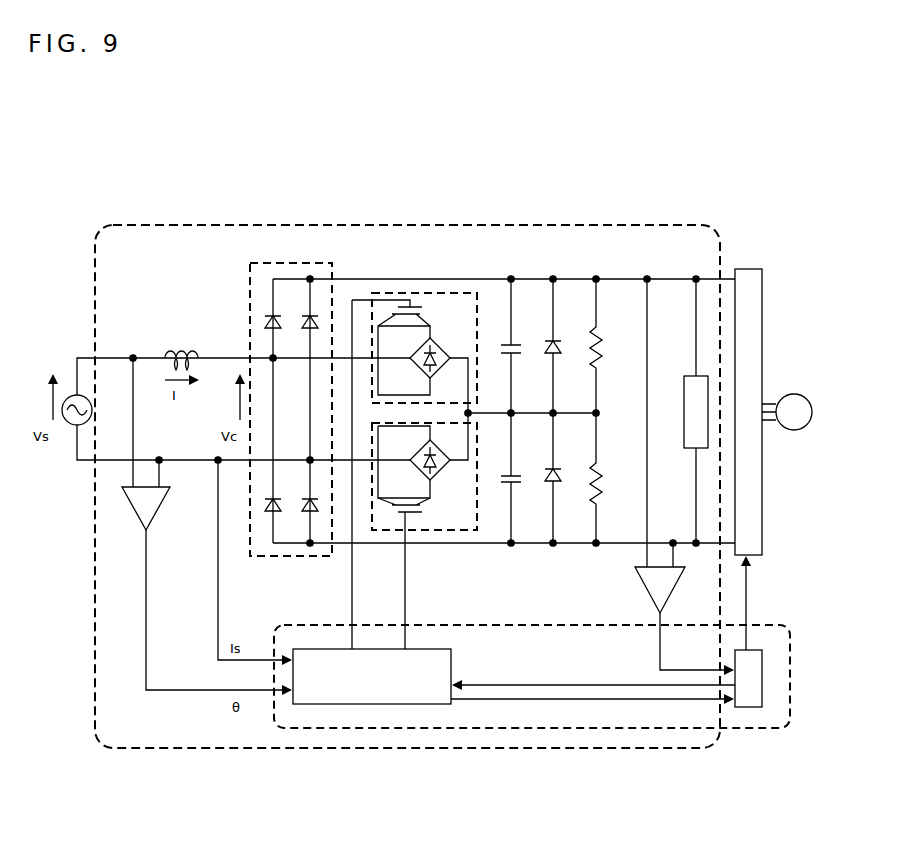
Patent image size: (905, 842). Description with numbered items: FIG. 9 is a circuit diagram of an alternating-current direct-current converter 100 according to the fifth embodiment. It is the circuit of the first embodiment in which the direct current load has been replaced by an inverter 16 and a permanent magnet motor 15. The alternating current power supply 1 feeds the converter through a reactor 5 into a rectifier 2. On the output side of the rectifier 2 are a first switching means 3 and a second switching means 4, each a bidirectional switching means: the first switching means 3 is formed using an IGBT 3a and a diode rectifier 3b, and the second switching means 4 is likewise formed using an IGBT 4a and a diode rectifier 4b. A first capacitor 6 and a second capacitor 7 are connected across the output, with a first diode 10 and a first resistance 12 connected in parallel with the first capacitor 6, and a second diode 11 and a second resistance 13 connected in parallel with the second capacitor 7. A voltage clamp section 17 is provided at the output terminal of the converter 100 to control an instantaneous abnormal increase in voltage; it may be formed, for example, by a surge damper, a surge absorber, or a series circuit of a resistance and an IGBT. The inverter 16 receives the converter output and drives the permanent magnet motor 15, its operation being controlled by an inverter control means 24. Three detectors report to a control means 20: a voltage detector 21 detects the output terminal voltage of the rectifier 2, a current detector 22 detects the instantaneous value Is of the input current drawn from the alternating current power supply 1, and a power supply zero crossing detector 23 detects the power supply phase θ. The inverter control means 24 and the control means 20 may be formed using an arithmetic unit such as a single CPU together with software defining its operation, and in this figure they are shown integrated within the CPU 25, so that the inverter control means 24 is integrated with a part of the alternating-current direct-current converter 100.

The alternating current power supply 1 is at (93, 372).
The rectifier 2 is at (263, 266).
The first switching means 3 is at (414, 446).
The IGBT 3a is at (410, 306).
The diode rectifier 3b is at (440, 342).
The second switching means 4 is at (424, 531).
The IGBT 4a is at (415, 533).
The diode rectifier 4b is at (439, 484).
The reactor 5 is at (176, 346).
The first capacitor 6 is at (513, 346).
The second capacitor 7 is at (513, 476).
The first diode 10 is at (560, 342).
The second diode 11 is at (560, 470).
The first resistance 12 is at (602, 330).
The second resistance 13 is at (602, 465).
The permanent magnet motor 15 is at (790, 392).
The inverter 16 is at (763, 298).
The voltage clamp section 17 is at (688, 376).
The control means 20 is at (452, 667).
The voltage detector 21 is at (642, 578).
The current detector 22 is at (218, 464).
The power supply zero crossing detector 23 is at (158, 528).
The inverter control means 24 is at (761, 684).
The CPU 25 is at (294, 626).
The alternating-current direct-current converter 100 is at (722, 264).